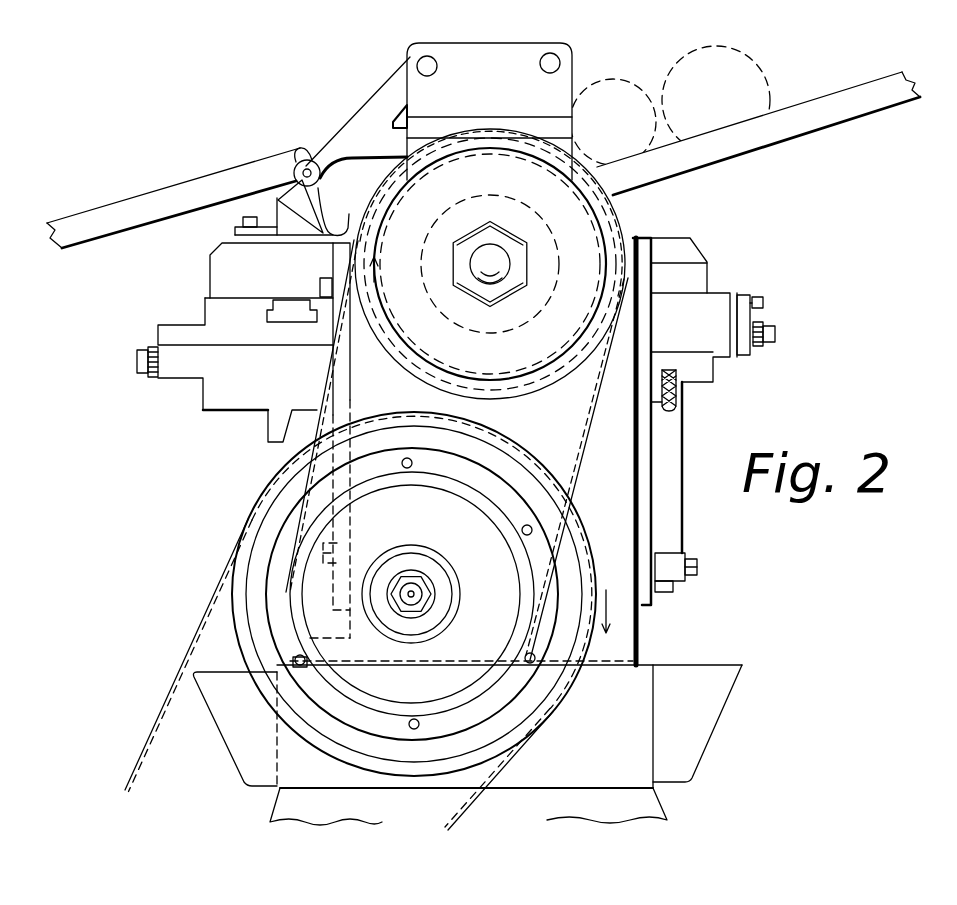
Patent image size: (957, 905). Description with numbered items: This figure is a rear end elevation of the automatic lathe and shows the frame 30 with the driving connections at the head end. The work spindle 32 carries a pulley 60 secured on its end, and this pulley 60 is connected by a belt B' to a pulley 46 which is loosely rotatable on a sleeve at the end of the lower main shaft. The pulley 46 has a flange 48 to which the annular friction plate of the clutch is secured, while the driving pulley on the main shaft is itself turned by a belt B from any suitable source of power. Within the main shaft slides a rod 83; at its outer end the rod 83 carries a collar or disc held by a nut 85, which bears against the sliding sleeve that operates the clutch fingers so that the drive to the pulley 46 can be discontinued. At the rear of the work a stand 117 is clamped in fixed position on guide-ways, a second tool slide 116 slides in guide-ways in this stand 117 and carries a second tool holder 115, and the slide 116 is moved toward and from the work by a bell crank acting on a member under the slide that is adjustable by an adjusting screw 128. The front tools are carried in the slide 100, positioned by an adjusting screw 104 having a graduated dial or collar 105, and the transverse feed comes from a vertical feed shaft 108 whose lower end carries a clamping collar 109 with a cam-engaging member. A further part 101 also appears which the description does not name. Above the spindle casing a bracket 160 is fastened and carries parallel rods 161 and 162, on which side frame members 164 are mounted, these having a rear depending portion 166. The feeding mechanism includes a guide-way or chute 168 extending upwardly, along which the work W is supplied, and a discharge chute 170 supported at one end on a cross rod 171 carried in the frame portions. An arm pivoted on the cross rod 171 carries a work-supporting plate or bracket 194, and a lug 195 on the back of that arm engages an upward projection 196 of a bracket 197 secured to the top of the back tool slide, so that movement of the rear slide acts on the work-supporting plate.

The frame 30 is at (632, 640).
The work spindle 32 is at (505, 275).
The pulley 46 is at (520, 633).
The flange 48 is at (457, 470).
The pulley 60 is at (523, 393).
The rod 83 is at (422, 594).
The nut 85 is at (430, 586).
The tool slide 100 is at (692, 255).
The bearing block 101 is at (708, 300).
The adjusting screw 104 is at (777, 334).
The graduated dial or collar 105 is at (763, 350).
The feed shaft 108 is at (662, 590).
The clamping collar 109 is at (684, 578).
The second tool holder 115 is at (218, 273).
The second tool slide 116 is at (211, 313).
The stand 117 is at (238, 404).
The adjusting screw 128 is at (139, 360).
The bracket 160 is at (503, 40).
The rod 161 is at (422, 63).
The rod 162 is at (548, 62).
The side frame members 164 is at (388, 82).
The rear depending portion 166 is at (329, 178).
The guide-way or chute 168 is at (848, 98).
The discharge chute 170 is at (162, 193).
The cross rod 171 is at (297, 158).
The work-supporting plate or bracket 194 is at (322, 208).
The lug 195 is at (290, 197).
The upward projection 196 is at (266, 215).
The bracket 197 is at (235, 232).
The belt B is at (358, 603).
The belt B' is at (529, 641).
The work W is at (666, 82).